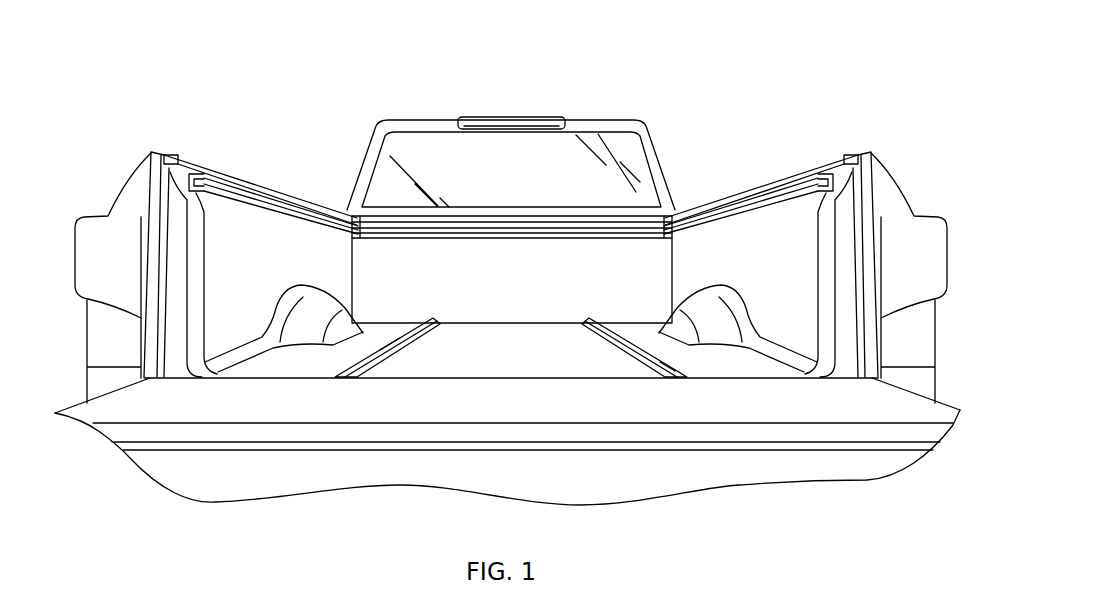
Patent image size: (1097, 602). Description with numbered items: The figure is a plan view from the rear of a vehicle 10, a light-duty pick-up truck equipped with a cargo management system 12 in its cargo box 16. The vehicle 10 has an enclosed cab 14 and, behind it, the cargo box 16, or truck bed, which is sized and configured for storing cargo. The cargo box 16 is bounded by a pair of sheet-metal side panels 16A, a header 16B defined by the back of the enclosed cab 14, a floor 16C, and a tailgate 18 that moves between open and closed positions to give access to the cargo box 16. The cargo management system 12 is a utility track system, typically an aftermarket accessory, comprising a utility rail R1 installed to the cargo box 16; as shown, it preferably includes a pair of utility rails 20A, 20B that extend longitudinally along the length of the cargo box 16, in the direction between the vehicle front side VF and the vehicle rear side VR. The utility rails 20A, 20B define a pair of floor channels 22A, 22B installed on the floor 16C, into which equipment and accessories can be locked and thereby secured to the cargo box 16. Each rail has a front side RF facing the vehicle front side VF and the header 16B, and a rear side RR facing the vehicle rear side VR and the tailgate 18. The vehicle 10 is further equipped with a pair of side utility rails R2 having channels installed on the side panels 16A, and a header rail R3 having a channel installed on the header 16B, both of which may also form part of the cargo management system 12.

The vehicle 10 is at (762, 47).
The cargo management system 12 is at (588, 277).
The enclosed cab 14 is at (598, 110).
The cargo box 16 is at (789, 143).
The side panels 16A is at (151, 152).
The header 16B is at (553, 260).
The floor 16C is at (512, 345).
The tailgate 18 is at (780, 400).
The utility rail 20A is at (410, 338).
The utility rail 20B is at (617, 348).
The floor channel 22A is at (385, 346).
The floor channel 22B is at (670, 364).
The utility rail R1 is at (576, 310).
The side utility rails R2 is at (260, 195).
The header rail R3 is at (477, 220).
The front side RF is at (416, 308).
The rear side RR is at (322, 370).
The vehicle front side VF is at (368, 73).
The vehicle rear side VR is at (84, 453).